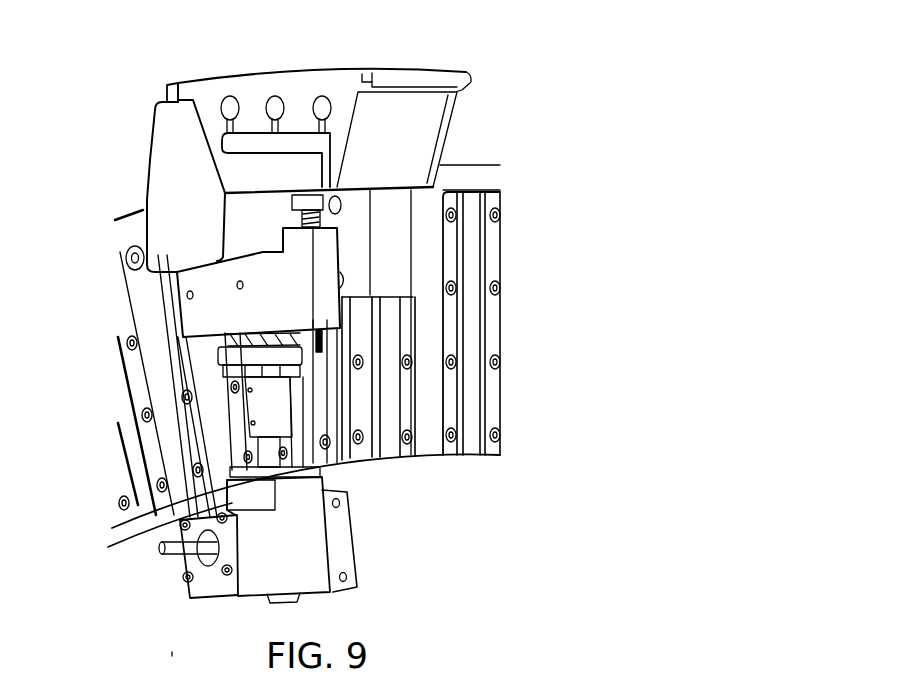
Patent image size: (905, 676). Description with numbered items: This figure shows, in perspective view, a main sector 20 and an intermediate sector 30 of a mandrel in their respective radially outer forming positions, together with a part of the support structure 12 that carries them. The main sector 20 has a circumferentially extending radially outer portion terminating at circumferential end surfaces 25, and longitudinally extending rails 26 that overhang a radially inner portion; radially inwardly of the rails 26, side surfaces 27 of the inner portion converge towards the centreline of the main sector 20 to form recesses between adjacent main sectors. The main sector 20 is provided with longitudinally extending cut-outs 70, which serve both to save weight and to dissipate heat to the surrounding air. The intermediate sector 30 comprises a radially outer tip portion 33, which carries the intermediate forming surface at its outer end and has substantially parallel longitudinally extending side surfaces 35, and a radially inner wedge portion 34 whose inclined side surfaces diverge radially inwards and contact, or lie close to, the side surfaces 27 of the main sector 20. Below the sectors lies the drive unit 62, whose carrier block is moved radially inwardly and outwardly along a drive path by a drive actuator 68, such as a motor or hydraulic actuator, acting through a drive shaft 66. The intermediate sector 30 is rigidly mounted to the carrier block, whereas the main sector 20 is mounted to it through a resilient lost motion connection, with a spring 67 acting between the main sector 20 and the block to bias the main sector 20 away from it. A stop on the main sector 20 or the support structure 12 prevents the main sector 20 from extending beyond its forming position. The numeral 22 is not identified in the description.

The support structure 12 is at (453, 245).
The main sector 20 is at (397, 135).
The top lip 22 is at (380, 72).
The circumferential end surface 25 is at (440, 76).
The rail 26 is at (362, 80).
The side surface 27 is at (395, 163).
The intermediate sector 30 is at (172, 175).
The radially outer tip portion 33 is at (168, 85).
The radially inner wedge portion 34 is at (163, 222).
The side surface 35 is at (172, 664).
The drive unit 62 is at (212, 317).
The drive shaft 66 is at (255, 403).
The spring 67 is at (317, 217).
The drive actuator 68 is at (303, 547).
The cut-out 70 is at (285, 142).